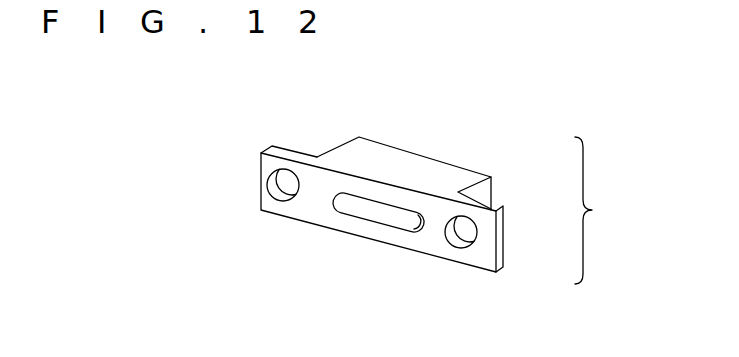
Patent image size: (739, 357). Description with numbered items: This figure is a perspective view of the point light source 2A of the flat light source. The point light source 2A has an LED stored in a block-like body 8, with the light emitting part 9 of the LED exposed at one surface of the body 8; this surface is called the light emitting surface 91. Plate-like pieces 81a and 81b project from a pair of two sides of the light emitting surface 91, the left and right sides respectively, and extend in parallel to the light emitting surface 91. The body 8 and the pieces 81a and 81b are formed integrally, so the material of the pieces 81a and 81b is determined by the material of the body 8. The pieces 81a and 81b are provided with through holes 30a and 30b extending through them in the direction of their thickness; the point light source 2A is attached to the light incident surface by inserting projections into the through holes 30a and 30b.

The point light source 2A is at (448, 210).
The body 8 is at (393, 155).
The plate-like piece 81a is at (288, 152).
The plate-like piece 81b is at (483, 208).
The through hole 30a is at (286, 184).
The through hole 30b is at (464, 234).
The light emitting part 9 is at (363, 208).
The light emitting surface 91 is at (426, 234).